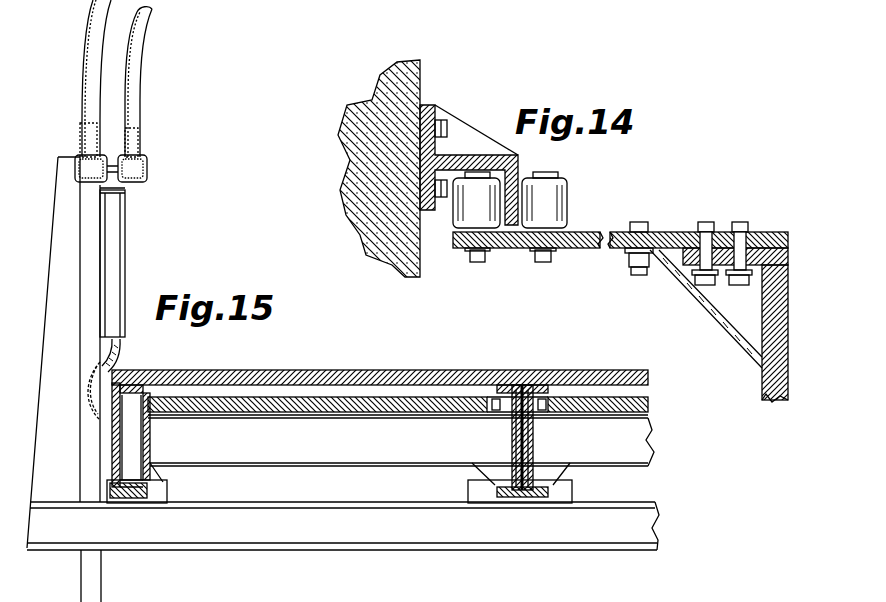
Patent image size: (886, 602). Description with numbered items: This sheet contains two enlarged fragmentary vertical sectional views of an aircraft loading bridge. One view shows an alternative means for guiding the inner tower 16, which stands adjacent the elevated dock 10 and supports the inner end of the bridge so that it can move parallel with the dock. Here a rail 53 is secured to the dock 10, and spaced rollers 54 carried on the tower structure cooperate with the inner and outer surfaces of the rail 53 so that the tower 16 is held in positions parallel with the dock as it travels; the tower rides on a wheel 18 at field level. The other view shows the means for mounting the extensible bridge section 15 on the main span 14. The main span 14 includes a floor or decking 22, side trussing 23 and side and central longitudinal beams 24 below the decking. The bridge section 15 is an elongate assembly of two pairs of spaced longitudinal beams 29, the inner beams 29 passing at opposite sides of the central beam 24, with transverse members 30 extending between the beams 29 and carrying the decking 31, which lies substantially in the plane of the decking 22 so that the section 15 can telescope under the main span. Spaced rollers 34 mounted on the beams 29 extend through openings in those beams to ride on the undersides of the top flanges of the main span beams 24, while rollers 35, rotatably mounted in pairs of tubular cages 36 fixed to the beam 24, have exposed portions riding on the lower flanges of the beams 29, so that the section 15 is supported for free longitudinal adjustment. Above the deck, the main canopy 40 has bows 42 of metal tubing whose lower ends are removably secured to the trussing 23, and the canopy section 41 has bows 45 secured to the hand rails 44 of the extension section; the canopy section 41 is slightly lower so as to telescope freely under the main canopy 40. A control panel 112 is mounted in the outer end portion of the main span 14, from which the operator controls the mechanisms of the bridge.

In FIG. 14, the elevated dock 10 is at (420, 80).
In FIG. 15, the main span 14 is at (458, 371).
In FIG. 15, the bridge section 15 is at (656, 430).
In FIG. 14, the inner tower 16 is at (757, 378).
In FIG. 15, the power driven and steerable wheel 18 is at (176, 598).
In FIG. 15, the decking 22 is at (368, 371).
In FIG. 15, the side trussing 23 is at (62, 216).
In FIG. 15, the longitudinal beam 24 is at (118, 450).
In FIG. 15, the beam 29 is at (150, 428).
In FIG. 15, the transverse member 30 is at (318, 449).
In FIG. 15, the decking 31 is at (388, 414).
In FIG. 15, the roller 34 is at (145, 372).
In FIG. 15, the roller 35 is at (497, 492).
In FIG. 15, the tubular cage 36 is at (170, 498).
In FIG. 15, the main canopy 40 is at (90, 24).
In FIG. 15, the canopy section 41 is at (134, 44).
In FIG. 15, the bow 42 is at (84, 80).
In FIG. 15, the hand rail 44 is at (148, 166).
In FIG. 15, the bow 45 is at (136, 108).
In FIG. 14, the rail 53 is at (519, 158).
In FIG. 14, the roller 54 is at (460, 212).
In FIG. 15, the control panel 112 is at (125, 221).